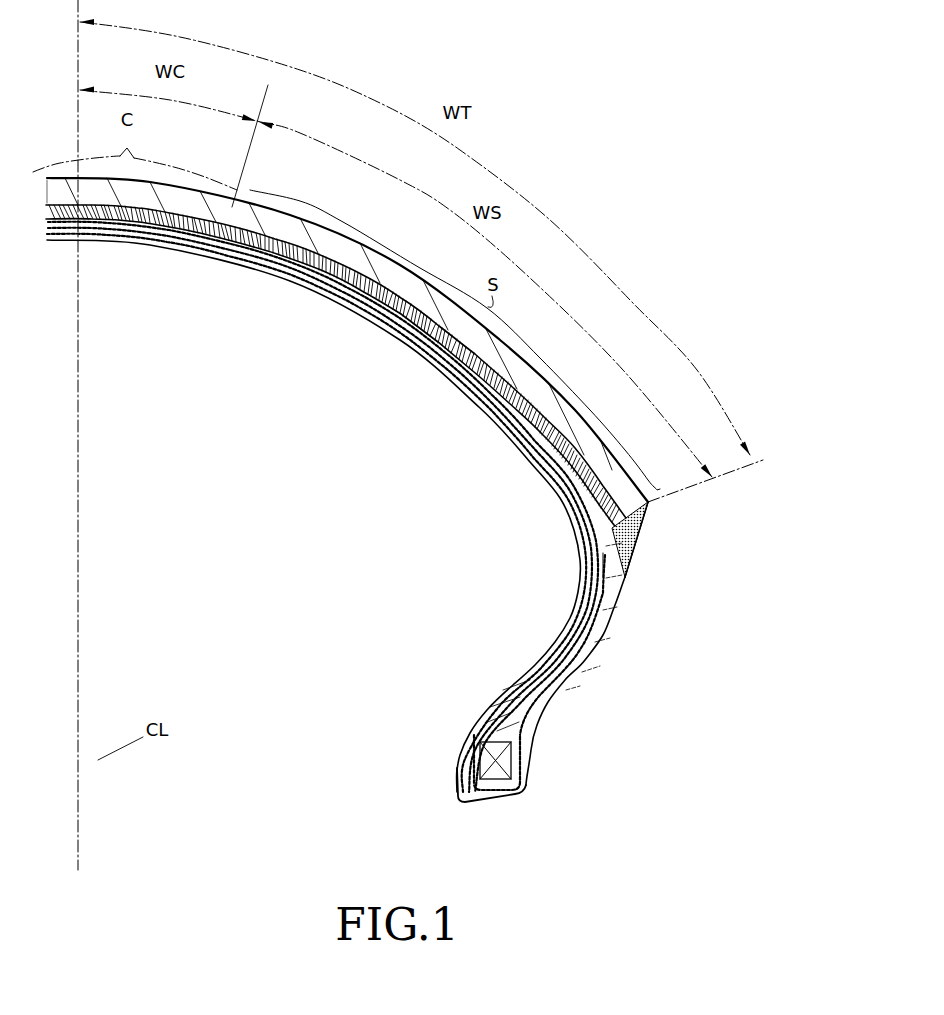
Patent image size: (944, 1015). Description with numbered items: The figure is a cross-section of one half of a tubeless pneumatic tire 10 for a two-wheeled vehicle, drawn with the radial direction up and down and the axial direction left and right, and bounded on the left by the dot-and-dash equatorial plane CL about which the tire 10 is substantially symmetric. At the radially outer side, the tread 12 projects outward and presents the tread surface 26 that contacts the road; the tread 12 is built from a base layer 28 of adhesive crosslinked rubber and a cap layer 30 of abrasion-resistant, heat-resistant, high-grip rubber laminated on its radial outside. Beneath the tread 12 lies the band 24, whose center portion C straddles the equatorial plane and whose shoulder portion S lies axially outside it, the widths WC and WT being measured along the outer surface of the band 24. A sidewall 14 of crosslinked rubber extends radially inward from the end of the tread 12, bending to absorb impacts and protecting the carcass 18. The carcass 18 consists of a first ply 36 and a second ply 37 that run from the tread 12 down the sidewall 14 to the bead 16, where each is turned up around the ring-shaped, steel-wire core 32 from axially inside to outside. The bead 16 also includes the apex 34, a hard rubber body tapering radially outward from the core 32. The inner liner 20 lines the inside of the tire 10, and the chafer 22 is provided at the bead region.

The pneumatic tire 10 is at (556, 80).
The tread 12 is at (182, 207).
The sidewall 14 is at (622, 634).
The bead 16 is at (628, 716).
The carcass 18 is at (308, 366).
The inner liner 20 is at (424, 362).
The chafer 22 is at (456, 806).
The band 24 is at (122, 236).
The tread surface 26 is at (558, 393).
The base layer 28 is at (190, 226).
The cap layer 30 is at (96, 198).
The core 32 is at (530, 772).
The apex 34 is at (542, 709).
The first ply 36 is at (252, 250).
The second ply 37 is at (292, 282).